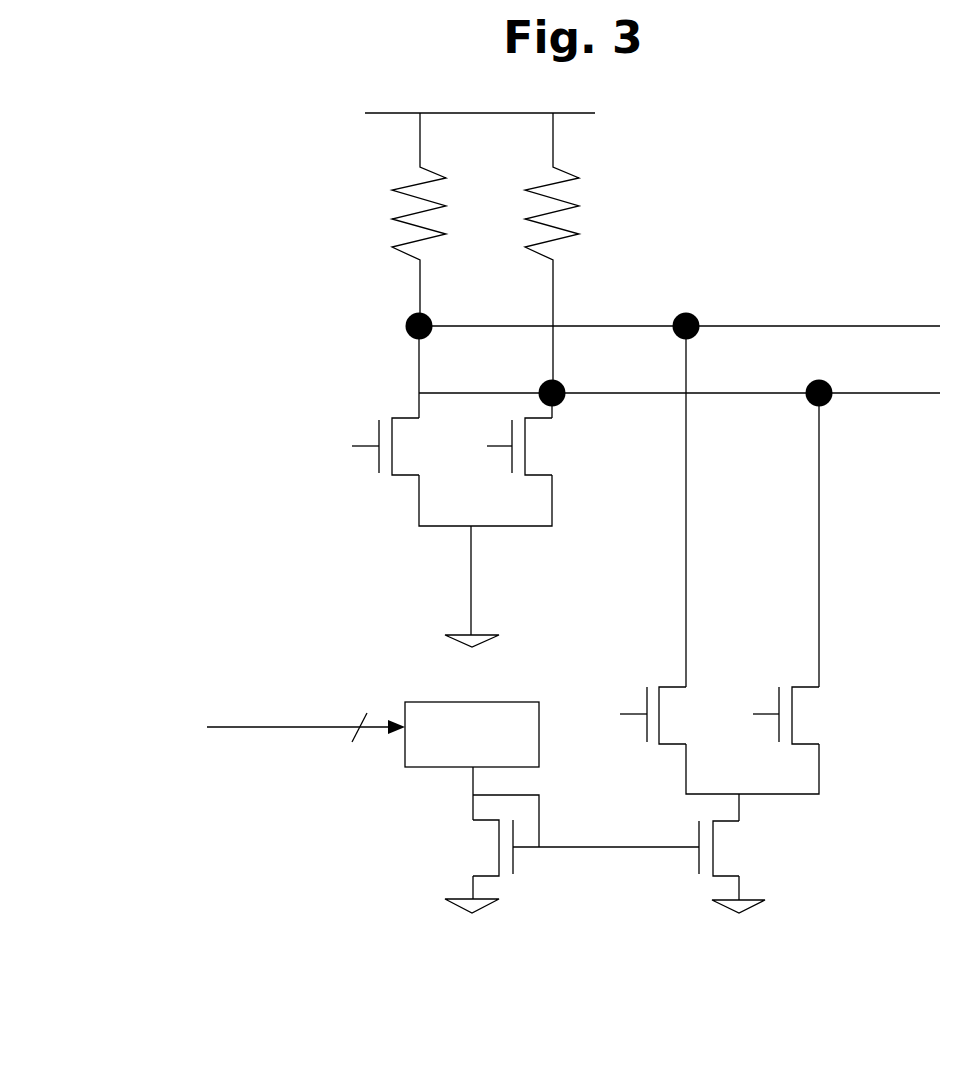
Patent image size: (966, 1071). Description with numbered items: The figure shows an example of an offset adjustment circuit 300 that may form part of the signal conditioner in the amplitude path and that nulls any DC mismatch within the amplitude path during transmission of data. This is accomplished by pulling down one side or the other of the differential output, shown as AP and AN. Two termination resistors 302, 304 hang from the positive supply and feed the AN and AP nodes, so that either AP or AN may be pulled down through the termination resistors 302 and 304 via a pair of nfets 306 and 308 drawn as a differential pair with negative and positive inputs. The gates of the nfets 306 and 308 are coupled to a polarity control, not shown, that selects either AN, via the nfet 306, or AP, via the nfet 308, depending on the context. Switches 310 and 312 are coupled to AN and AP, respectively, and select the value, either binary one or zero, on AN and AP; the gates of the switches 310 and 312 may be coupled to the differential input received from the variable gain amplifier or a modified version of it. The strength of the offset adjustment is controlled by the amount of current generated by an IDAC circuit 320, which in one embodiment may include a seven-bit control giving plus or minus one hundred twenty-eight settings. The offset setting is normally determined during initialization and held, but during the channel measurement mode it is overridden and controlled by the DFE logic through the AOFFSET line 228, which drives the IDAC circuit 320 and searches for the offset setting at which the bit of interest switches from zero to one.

The offset adjustment circuit 300 is at (198, 442).
The termination resistor 302 is at (311, 219).
The termination resistor 304 is at (625, 253).
The nfet 306 is at (623, 670).
The nfet 308 is at (764, 670).
The switch 310 is at (353, 400).
The switch 312 is at (548, 452).
The IDAC circuit 320 is at (430, 768).
The line 228 is at (280, 698).